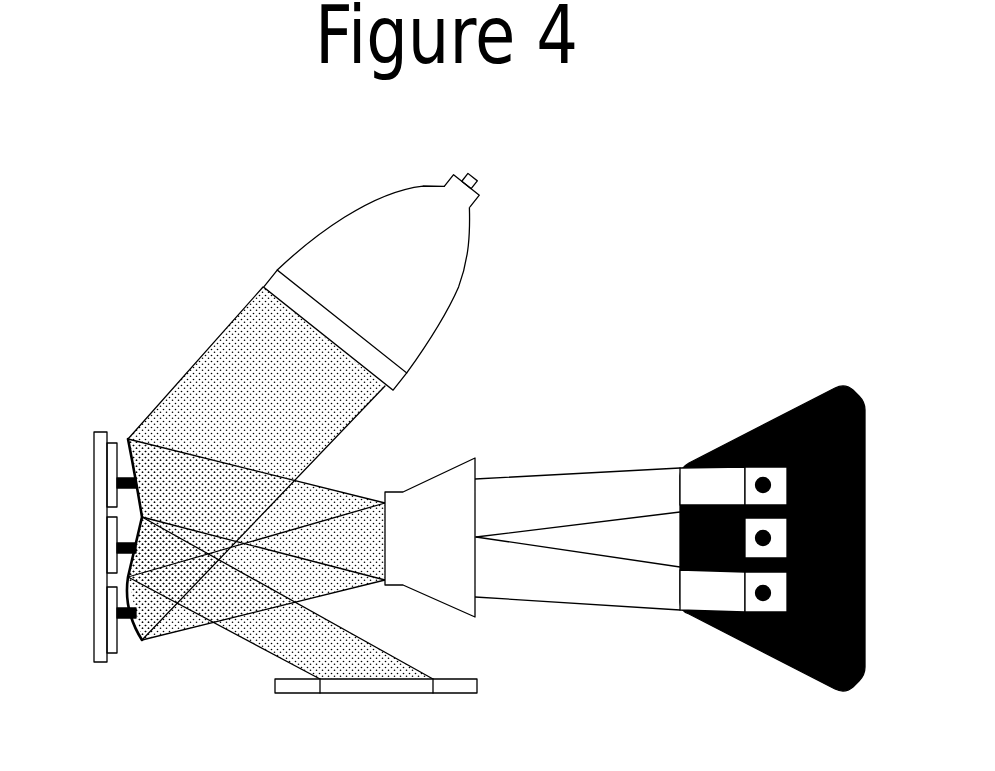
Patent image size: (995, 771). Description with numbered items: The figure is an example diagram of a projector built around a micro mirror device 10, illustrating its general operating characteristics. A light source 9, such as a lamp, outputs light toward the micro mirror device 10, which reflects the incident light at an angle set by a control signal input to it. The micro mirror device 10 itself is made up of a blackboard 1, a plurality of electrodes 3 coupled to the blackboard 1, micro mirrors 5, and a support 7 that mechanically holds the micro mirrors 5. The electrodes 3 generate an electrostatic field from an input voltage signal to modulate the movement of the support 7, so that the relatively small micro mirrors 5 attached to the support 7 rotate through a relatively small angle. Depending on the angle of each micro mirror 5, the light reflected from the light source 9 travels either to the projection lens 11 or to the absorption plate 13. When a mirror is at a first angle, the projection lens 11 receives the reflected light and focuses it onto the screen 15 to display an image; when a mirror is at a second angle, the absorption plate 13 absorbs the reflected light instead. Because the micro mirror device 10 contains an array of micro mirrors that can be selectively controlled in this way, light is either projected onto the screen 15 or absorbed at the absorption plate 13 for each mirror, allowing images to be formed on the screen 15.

The blackboard 1 is at (95, 445).
The plurality of electrodes 3 is at (112, 653).
The micro mirrors 5 is at (129, 437).
The support 7 is at (122, 617).
The light source 9 is at (311, 240).
The micro mirror device 10 is at (87, 430).
The projection lens 11 is at (445, 475).
The absorption plate 13 is at (377, 695).
The screen 15 is at (758, 425).